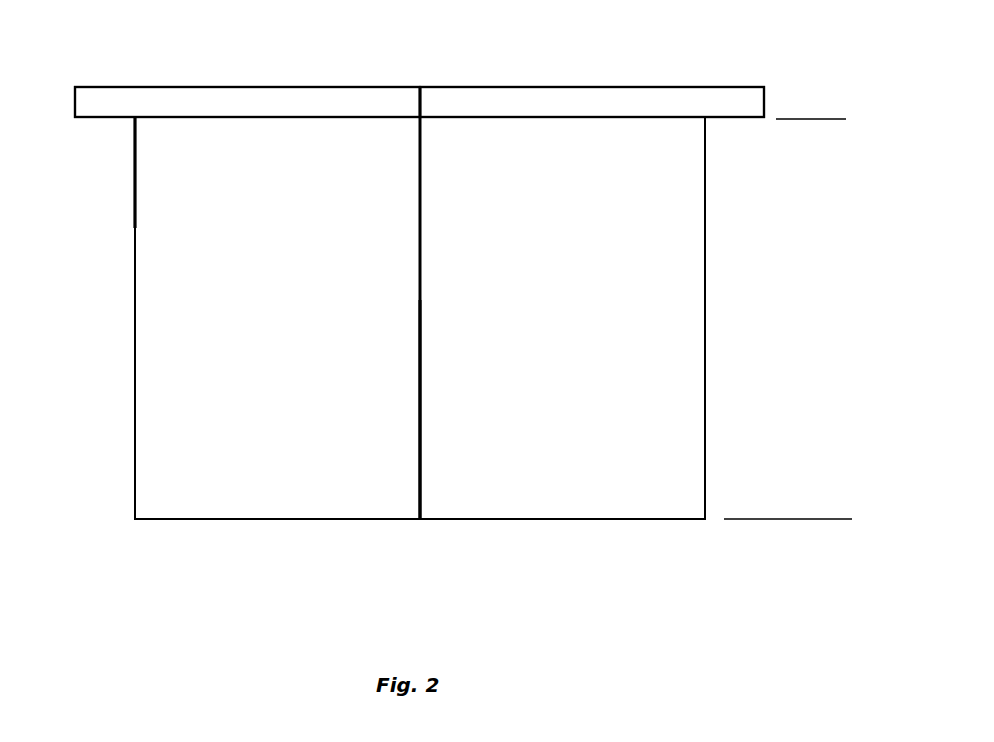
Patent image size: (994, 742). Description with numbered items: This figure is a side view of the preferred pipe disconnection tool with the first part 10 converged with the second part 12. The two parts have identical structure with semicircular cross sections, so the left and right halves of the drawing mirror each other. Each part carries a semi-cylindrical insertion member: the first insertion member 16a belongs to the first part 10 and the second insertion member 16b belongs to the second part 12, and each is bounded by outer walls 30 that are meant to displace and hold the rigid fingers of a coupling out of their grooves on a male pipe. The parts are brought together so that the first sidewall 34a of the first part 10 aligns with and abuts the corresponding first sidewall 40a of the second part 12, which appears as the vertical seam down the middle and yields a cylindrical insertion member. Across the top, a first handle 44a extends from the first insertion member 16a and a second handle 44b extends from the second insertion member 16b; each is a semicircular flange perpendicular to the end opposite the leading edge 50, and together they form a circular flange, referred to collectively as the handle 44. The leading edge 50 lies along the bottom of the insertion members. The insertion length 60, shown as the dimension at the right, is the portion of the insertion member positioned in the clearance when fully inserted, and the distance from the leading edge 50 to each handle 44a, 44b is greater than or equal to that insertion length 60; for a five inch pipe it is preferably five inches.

The first part 10 is at (458, 305).
The second part 12 is at (729, 234).
The outer walls 30 is at (289, 299).
The first sidewall 34a is at (422, 243).
The first sidewall 40a is at (418, 378).
The handle 44 is at (477, 79).
The first handle 44a is at (242, 93).
The second handle 44b is at (579, 87).
The first insertion member 16a is at (215, 496).
The second insertion member 16b is at (547, 498).
The leading edge 50 is at (356, 520).
The insertion length 60 is at (833, 132).